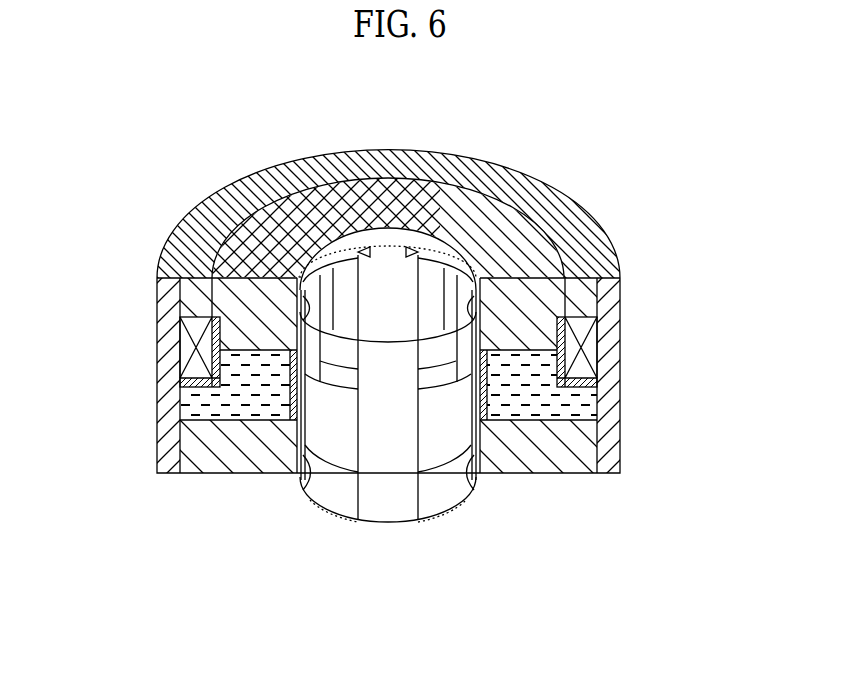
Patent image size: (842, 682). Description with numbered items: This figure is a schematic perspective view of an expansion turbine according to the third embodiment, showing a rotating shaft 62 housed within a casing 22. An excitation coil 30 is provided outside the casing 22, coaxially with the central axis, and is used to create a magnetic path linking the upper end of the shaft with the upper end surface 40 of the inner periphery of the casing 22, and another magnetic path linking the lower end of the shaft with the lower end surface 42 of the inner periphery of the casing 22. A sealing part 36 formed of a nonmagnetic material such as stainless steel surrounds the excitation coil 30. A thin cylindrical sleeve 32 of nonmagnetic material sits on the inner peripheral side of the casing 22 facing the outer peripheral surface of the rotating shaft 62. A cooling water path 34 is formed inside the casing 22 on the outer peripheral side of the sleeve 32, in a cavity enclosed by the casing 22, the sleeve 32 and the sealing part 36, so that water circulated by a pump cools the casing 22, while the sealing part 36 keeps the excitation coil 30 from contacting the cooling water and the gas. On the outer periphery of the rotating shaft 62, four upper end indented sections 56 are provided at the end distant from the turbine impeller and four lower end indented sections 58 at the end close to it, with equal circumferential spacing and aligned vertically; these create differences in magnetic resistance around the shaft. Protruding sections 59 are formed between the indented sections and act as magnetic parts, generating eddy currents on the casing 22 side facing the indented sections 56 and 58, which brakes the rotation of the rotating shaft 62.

The casing 22 is at (608, 238).
The excitation coil 30 is at (180, 337).
The sleeve 32 is at (297, 400).
The cooling water path 34 is at (193, 400).
The sealing part 36 is at (190, 370).
The upper end surface 40 is at (208, 212).
The lower end surface 42 is at (313, 487).
The upper end indented sections 56 is at (318, 278).
The lower end indented sections 58 is at (343, 493).
The protruding sections 59 is at (246, 268).
The rotating shaft 62 is at (387, 500).